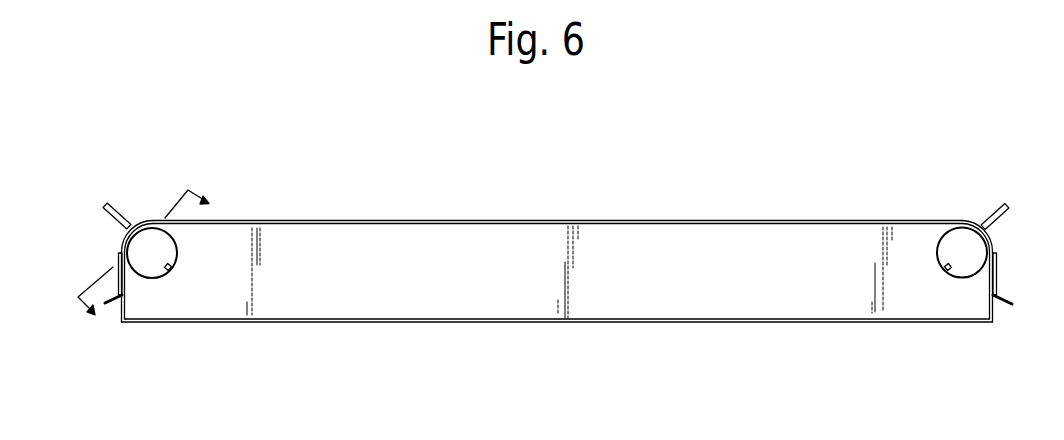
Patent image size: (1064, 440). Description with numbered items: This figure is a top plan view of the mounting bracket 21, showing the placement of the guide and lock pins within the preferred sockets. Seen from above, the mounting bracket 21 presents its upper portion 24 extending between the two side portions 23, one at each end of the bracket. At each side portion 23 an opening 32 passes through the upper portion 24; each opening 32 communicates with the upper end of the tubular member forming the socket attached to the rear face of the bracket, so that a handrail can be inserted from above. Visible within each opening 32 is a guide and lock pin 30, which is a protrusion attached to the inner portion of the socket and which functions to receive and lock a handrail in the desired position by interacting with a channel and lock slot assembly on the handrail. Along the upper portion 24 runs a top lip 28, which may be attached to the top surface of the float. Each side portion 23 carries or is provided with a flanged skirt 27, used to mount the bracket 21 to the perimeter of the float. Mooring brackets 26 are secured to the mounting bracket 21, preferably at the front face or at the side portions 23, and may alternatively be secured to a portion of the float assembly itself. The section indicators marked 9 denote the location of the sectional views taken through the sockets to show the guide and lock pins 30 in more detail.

The section line indicator 9 is at (139, 235).
The mounting bracket 21 is at (529, 177).
The side portions 23 is at (997, 277).
The upper portion 24 is at (712, 302).
The mooring brackets 26 is at (107, 205).
The flanged skirt 27 is at (112, 307).
The top lip 28 is at (119, 318).
The guide and lock pin 30 is at (170, 267).
The openings 32 is at (150, 220).